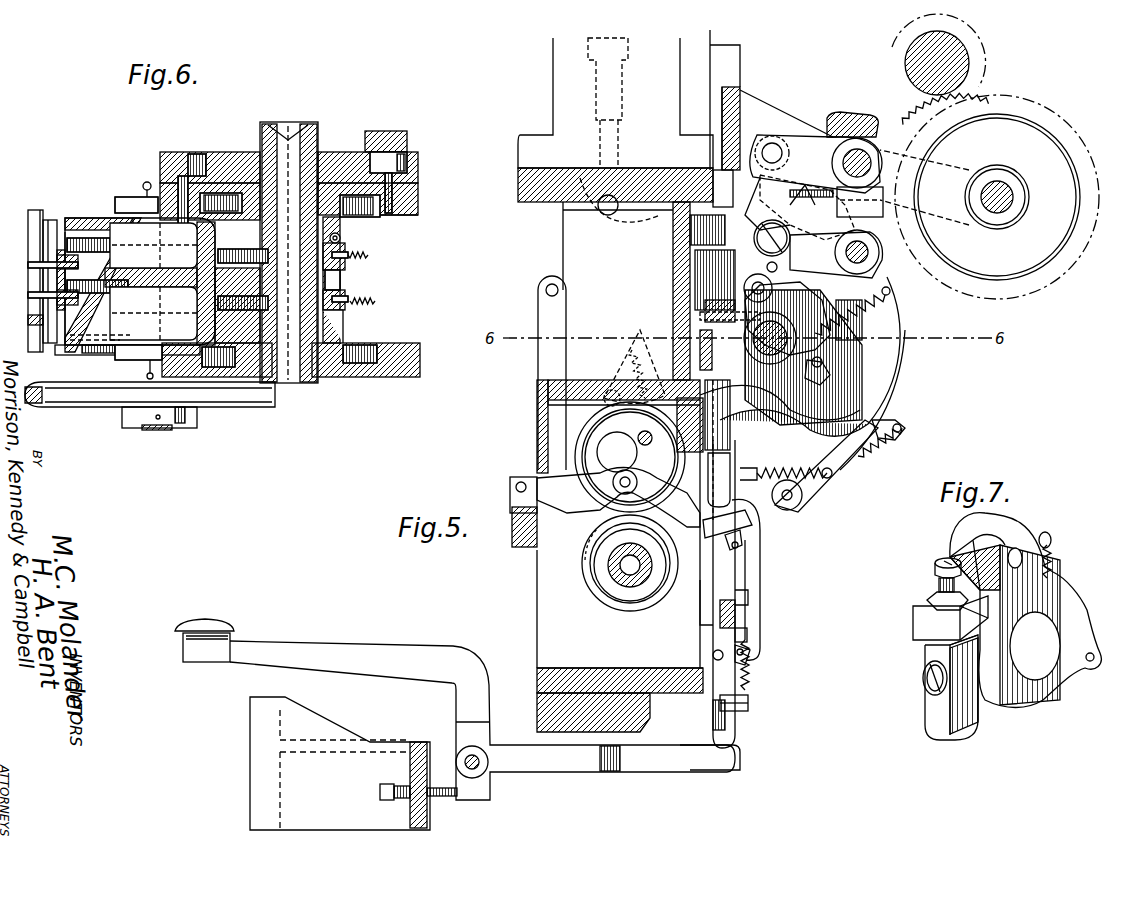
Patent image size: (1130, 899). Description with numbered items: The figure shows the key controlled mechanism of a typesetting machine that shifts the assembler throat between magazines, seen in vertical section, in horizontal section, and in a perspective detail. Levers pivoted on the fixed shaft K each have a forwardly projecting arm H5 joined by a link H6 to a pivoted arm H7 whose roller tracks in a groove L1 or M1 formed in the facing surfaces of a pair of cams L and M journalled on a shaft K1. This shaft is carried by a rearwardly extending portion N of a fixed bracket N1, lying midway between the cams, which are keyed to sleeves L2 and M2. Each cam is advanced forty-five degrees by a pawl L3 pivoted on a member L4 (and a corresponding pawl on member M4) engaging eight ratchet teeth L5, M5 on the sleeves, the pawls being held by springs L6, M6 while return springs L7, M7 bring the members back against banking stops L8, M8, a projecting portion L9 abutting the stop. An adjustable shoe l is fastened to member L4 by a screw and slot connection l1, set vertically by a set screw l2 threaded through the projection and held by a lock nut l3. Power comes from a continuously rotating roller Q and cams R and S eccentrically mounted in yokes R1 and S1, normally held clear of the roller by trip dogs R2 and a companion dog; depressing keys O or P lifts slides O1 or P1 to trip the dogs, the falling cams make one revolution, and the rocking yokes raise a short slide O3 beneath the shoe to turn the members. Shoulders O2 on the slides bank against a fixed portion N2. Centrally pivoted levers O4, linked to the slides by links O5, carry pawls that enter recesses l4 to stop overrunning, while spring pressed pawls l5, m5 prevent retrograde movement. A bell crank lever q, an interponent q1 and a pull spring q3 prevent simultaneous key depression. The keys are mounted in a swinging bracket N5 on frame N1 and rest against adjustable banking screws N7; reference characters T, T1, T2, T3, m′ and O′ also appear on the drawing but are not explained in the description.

In FIG. 6, the top frame block T is at (226, 160).
In FIG. 6, the screw T1 is at (196, 160).
In FIG. 6, the cap block T3 is at (390, 132).
In FIG. 6, the screw T2 is at (403, 156).
In FIG. 6, the shaft K1 is at (312, 150).
In FIG. 5, the shaft K1 is at (770, 390).
In FIG. 6, the cam L is at (416, 215).
In FIG. 5, the cam L is at (893, 358).
In FIG. 6, the groove L1 is at (368, 218).
In FIG. 5, the groove L1 is at (870, 395).
In FIG. 6, the sleeve L2 is at (270, 212).
In FIG. 5, the pawl L3 is at (802, 285).
In FIG. 7, the pawl L3 is at (1044, 532).
In FIG. 6, the member L4 is at (350, 258).
In FIG. 5, the member L4 is at (836, 360).
In FIG. 7, the member L4 is at (1066, 586).
In FIG. 6, the ratchet teeth L5 is at (339, 240).
In FIG. 5, the ratchet teeth L5 is at (814, 368).
In FIG. 6, the spring L6 is at (341, 240).
In FIG. 5, the spring L6 is at (862, 330).
In FIG. 7, the spring L6 is at (1053, 562).
In FIG. 6, the spring L7 is at (369, 256).
In FIG. 5, the spring L7 is at (892, 294).
In FIG. 6, the banking stop L8 is at (210, 260).
In FIG. 5, the banking stop L8 is at (698, 290).
In FIG. 7, the projecting portion L9 is at (914, 622).
In FIG. 6, the shoe l is at (230, 252).
In FIG. 5, the shoe l is at (742, 330).
In FIG. 7, the shoe l is at (926, 728).
In FIG. 7, the screw and slot connection l1 is at (923, 680).
In FIG. 7, the set screw l2 is at (944, 562).
In FIG. 7, the lock nut l3 is at (938, 592).
In FIG. 5, the recesses l4 is at (905, 338).
In FIG. 6, the spring pressed pawl l5 is at (136, 208).
In FIG. 5, the spring pressed pawl l5 is at (630, 355).
In FIG. 6, the rearwardly extending portion N is at (341, 280).
In FIG. 5, the rearwardly extending portion N is at (690, 238).
In FIG. 6, the fixed bracket N1 is at (95, 338).
In FIG. 5, the fixed bracket N1 is at (568, 238).
In FIG. 5, the fixed portion of the supporting frame N2 is at (740, 614).
In FIG. 5, the bracket N5 is at (340, 763).
In FIG. 5, the adjustable banking screws N7 is at (437, 792).
In FIG. 6, the cam M is at (420, 345).
In FIG. 6, the groove M1 is at (375, 345).
In FIG. 6, the sleeve M2 is at (262, 330).
In FIG. 6, the member M4 is at (350, 297).
In FIG. 6, the ratchet teeth M5 is at (340, 330).
In FIG. 6, the spring M6 is at (341, 318).
In FIG. 6, the spring M7 is at (376, 301).
In FIG. 6, the banking stop M8 is at (208, 310).
In FIG. 6, the screw m′ is at (242, 308).
In FIG. 6, the spring pressed pawl m5 is at (122, 358).
In FIG. 6, the cam R is at (95, 240).
In FIG. 5, the cam R is at (598, 430).
In FIG. 6, the yoke R1 is at (78, 240).
In FIG. 5, the yoke R1 is at (574, 503).
In FIG. 5, the trip dog R2 is at (745, 532).
In FIG. 6, the cam S is at (55, 320).
In FIG. 6, the yoke S1 is at (38, 330).
In FIG. 5, the forwardly projecting arm H5 is at (790, 135).
In FIG. 5, the link H6 is at (792, 172).
In FIG. 5, the pivotally mounted arm H7 is at (808, 245).
In FIG. 5, the shaft K is at (872, 162).
In FIG. 5, the key O is at (734, 755).
In FIG. 5, the slide block O′ is at (700, 412).
In FIG. 5, the slide O1 is at (898, 424).
In FIG. 5, the shoulder O2 is at (752, 598).
In FIG. 5, the short vertical slide O3 is at (745, 475).
In FIG. 5, the centrally pivoted lever O4 is at (852, 460).
In FIG. 5, the link O5 is at (758, 555).
In FIG. 5, the key P is at (255, 643).
In FIG. 5, the slide P1 is at (730, 725).
In FIG. 5, the roller Q is at (628, 608).
In FIG. 5, the bell crank lever q is at (750, 635).
In FIG. 5, the interponent q1 is at (720, 704).
In FIG. 5, the pull spring q3 is at (752, 668).